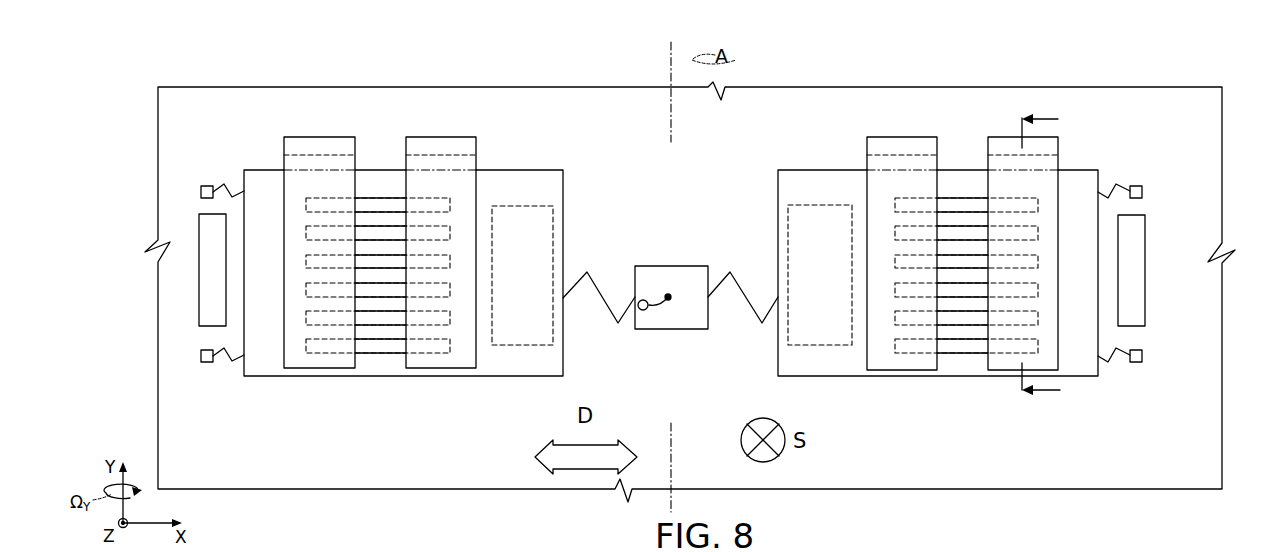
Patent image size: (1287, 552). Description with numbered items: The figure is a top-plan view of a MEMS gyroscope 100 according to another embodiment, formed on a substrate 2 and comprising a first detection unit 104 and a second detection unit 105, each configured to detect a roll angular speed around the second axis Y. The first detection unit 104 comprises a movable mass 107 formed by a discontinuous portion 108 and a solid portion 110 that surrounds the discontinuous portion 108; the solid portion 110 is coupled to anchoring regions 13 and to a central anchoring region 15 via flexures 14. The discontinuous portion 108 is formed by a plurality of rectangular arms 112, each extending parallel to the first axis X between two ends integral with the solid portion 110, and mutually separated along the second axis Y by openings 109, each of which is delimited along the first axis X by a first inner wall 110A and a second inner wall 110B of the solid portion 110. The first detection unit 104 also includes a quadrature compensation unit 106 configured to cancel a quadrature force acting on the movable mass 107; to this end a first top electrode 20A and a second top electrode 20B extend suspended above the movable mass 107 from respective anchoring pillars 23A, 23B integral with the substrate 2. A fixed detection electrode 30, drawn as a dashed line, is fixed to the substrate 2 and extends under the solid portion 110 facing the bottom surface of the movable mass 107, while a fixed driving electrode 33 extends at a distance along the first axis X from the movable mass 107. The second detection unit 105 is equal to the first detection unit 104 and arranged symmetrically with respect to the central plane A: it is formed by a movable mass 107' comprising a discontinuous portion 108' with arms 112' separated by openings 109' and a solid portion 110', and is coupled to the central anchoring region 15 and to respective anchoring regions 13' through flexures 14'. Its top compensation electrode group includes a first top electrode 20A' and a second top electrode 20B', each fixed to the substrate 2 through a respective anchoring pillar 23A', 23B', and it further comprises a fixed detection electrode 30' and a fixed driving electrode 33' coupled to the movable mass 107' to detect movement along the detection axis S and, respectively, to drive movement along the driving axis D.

The substrate 2 is at (1198, 467).
The MEMS gyroscope 100 is at (148, 80).
The first detection unit 104 is at (1165, 110).
The second detection unit 105 is at (400, 277).
The quadrature compensation unit 106 is at (953, 273).
The movable mass 107 is at (747, 143).
The movable mass 107' is at (486, 414).
The discontinuous portion 108 is at (963, 408).
The discontinuous portion 108' is at (381, 404).
The openings 109 is at (947, 273).
The openings 109' is at (416, 388).
The solid portion 110 is at (904, 276).
The solid portion 110' is at (401, 296).
The first inner wall 110A is at (1043, 343).
The second inner wall 110B is at (888, 232).
The arms 112 is at (996, 377).
The arms 112' is at (380, 250).
The anchoring regions 13 is at (1161, 261).
The anchoring regions 13' is at (189, 261).
The flexures 14 is at (927, 243).
The flexures 14' is at (420, 255).
The central anchoring region 15 is at (645, 266).
The first top electrode 20A is at (915, 240).
The first top electrode 20A' is at (421, 242).
The second top electrode 20B is at (1079, 162).
The second top electrode 20B' is at (306, 405).
The anchoring pillar 23A is at (888, 233).
The anchoring pillar 23A' is at (447, 234).
The anchoring pillar 23B is at (1012, 233).
The anchoring pillar 23B' is at (322, 234).
The fixed detection electrode 30 is at (790, 265).
The fixed detection electrode 30' is at (548, 248).
The fixed driving electrode 33 is at (1158, 270).
The fixed driving electrode 33' is at (198, 270).